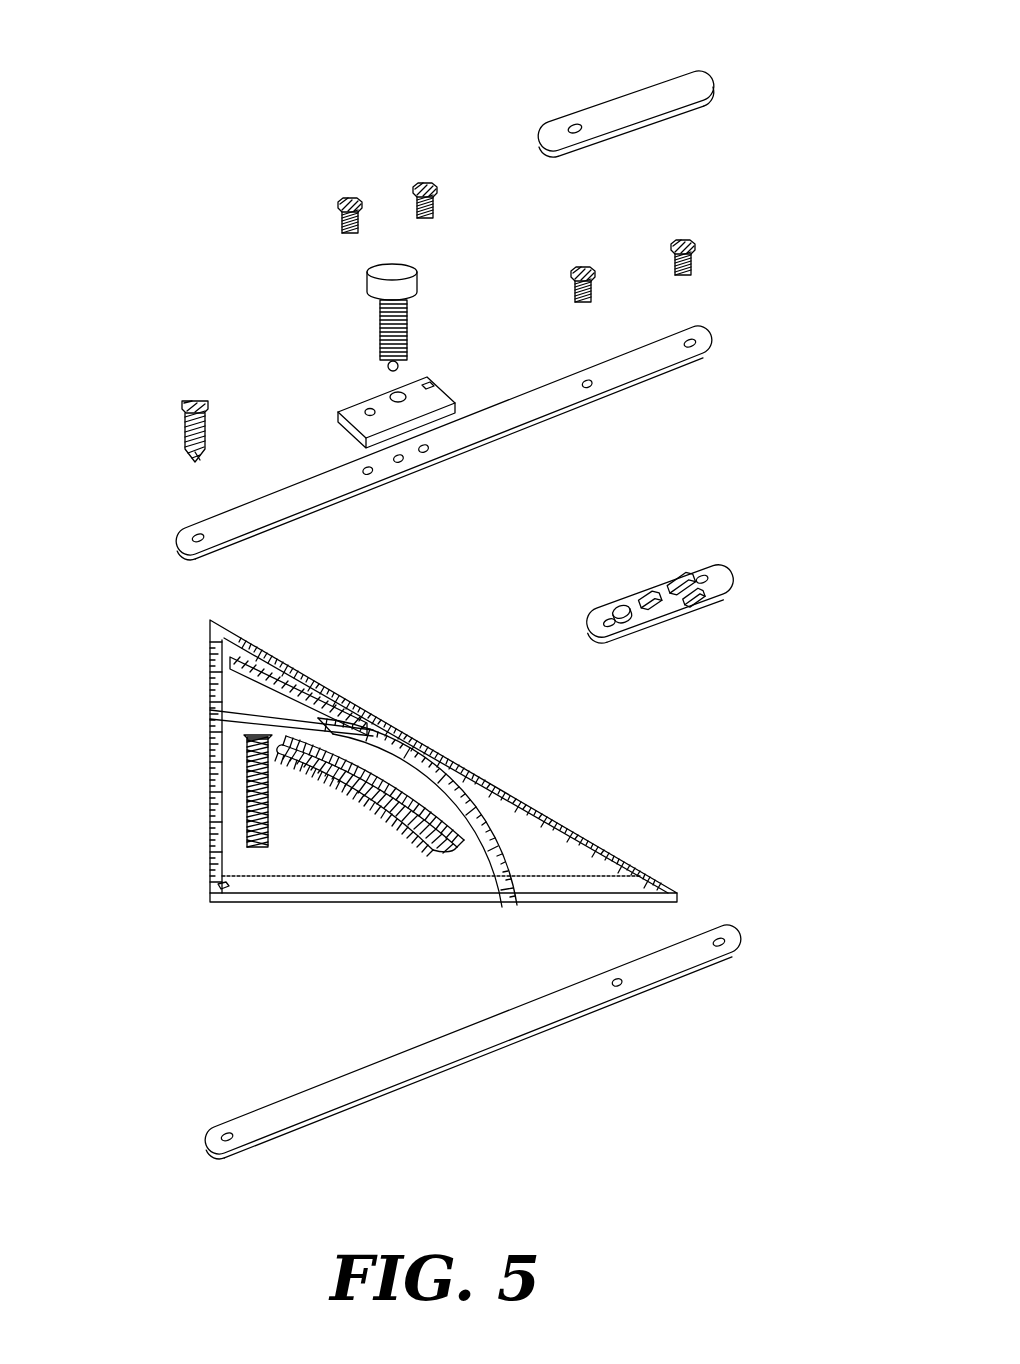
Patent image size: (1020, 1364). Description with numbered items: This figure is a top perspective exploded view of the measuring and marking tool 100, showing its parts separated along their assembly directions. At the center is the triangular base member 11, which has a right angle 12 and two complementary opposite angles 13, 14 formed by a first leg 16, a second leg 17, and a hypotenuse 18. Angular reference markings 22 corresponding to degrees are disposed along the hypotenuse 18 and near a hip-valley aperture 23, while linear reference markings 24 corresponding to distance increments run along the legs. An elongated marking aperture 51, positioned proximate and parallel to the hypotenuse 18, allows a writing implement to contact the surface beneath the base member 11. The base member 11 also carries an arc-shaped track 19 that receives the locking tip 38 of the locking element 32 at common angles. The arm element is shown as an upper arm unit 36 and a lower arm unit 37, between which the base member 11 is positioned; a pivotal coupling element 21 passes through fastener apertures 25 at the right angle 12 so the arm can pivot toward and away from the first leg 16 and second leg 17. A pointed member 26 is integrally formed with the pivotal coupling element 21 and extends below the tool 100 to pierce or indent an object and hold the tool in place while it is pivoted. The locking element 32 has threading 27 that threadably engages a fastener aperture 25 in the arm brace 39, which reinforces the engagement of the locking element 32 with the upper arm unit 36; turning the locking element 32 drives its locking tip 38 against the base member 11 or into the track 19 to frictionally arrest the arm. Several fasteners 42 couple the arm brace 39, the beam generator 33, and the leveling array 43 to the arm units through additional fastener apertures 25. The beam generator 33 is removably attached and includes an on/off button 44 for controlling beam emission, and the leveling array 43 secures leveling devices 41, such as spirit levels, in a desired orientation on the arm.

The measuring and marking tool 100 is at (140, 68).
The triangular base member 11 is at (424, 765).
The right angle 12 is at (224, 904).
The complementary opposite angle 13 is at (674, 885).
The complementary opposite angle 14 is at (223, 630).
The first leg 16 is at (290, 902).
The second leg 17 is at (208, 752).
The hypotenuse 18 is at (417, 827).
The track 19 is at (502, 890).
The pivotal coupling element 21 is at (170, 417).
The angular reference markings 22 is at (436, 844).
The hip-valley aperture 23 is at (438, 858).
The linear reference markings 24 is at (208, 795).
The fastener apertures 25 is at (364, 410).
The pointed member 26 is at (191, 456).
The threading 27 is at (387, 335).
The locking element 32 is at (419, 293).
The beam generator 33 is at (611, 90).
The upper arm unit 36 is at (284, 512).
The lower arm unit 37 is at (428, 1064).
The locking tip 38 is at (402, 364).
The arm brace 39 is at (355, 425).
The leveling device 41 is at (612, 590).
The fasteners 42 is at (342, 202).
The leveling array 43 is at (659, 601).
The on/off switch or button 44 is at (563, 124).
The elongated marking aperture 51 is at (318, 699).